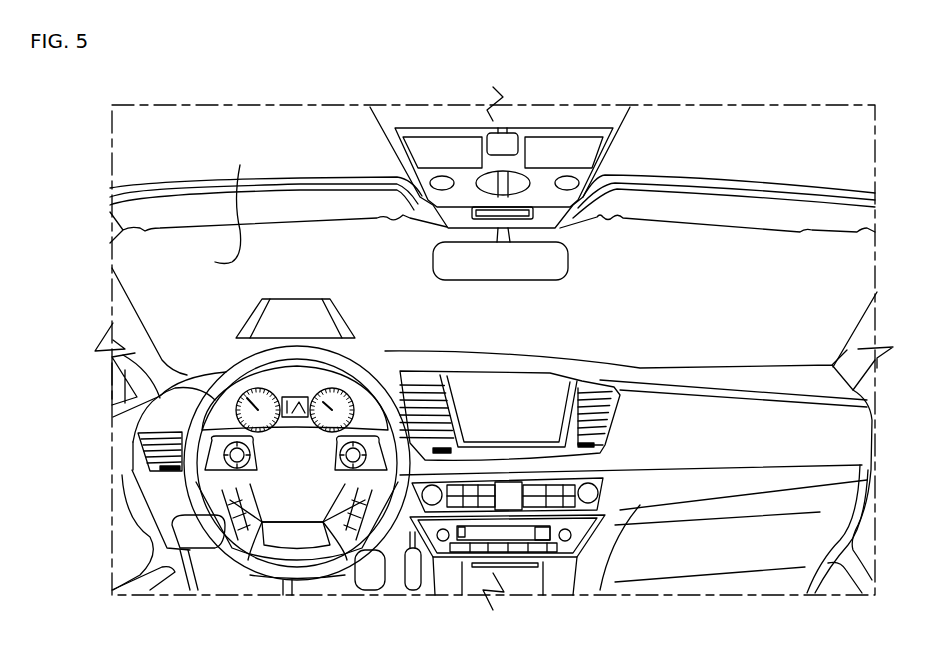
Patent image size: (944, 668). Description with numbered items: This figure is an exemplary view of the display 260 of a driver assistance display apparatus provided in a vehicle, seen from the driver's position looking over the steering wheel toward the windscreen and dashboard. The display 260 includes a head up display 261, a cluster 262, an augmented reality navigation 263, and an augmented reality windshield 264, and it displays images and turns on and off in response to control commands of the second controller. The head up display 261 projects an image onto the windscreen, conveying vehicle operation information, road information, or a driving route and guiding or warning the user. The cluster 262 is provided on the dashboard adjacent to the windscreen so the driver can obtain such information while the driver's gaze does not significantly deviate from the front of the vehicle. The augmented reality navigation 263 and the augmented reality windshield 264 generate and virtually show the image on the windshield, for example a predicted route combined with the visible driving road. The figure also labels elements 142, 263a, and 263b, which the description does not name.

The steering wheel hub 142 is at (292, 495).
The display 260 is at (227, 476).
The head up display (HUD) 261 is at (272, 299).
The cluster 262 is at (503, 385).
The augmented reality navigation 263 is at (260, 203).
The camera 263a is at (228, 450).
The camera 263b is at (440, 440).
The augmented reality windshield 264 is at (345, 565).